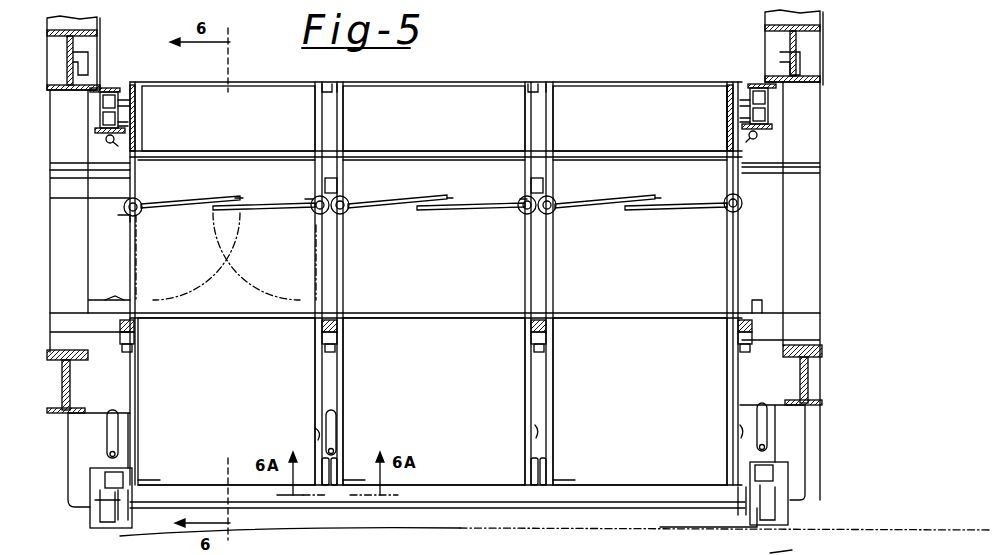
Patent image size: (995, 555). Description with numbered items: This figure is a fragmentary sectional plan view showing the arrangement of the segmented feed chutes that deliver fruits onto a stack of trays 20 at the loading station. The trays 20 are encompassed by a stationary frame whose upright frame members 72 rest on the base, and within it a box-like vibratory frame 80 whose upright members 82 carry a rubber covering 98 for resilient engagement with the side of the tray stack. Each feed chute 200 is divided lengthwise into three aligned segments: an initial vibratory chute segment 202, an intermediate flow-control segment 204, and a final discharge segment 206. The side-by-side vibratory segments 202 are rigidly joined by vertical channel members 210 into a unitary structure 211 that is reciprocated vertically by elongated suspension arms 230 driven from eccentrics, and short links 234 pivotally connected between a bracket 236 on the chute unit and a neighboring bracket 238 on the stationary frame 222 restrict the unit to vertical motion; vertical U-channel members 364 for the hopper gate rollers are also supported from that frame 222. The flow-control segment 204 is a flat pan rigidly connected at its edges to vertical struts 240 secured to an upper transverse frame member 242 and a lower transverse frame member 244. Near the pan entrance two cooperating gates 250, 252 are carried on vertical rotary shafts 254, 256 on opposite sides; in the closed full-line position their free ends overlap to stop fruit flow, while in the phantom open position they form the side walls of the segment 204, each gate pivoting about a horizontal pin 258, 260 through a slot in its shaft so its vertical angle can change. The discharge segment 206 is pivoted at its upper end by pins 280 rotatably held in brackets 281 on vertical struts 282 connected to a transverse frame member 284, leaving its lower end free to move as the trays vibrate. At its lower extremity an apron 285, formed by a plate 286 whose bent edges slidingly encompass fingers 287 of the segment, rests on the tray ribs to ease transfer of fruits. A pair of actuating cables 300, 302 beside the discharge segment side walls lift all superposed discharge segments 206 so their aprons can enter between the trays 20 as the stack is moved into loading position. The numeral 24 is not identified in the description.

The tray 20 is at (537, 531).
The base 24 is at (706, 549).
The upright frame member 72 is at (47, 416).
The vibratory frame 80 is at (90, 514).
The upright member 82 is at (102, 476).
The rubber covering 98 is at (121, 498).
The feed chute 200 is at (578, 63).
The vibratory chute segment 202 is at (297, 128).
The intermediate flow-control segment 204 is at (293, 281).
The discharge segment 206 is at (262, 401).
The channel member 210 is at (336, 82).
The unitary structure 211 is at (611, 81).
The stationary frame 222 is at (100, 33).
The suspension arm 230 is at (120, 143).
The short link 234 is at (138, 112).
The bracket 236 is at (128, 130).
The bracket 238 is at (118, 88).
The vertical strut 240 is at (520, 181).
The transverse frame member 242 is at (125, 170).
The transverse frame member 244 is at (107, 303).
The gate 250 is at (140, 257).
The gate 252 is at (316, 247).
The vertical rotary shaft 254 is at (312, 201).
The vertical rotary shaft 256 is at (236, 205).
The horizontal pin 258 is at (130, 214).
The horizontal pin 260 is at (313, 190).
The pin 280 is at (315, 322).
The bracket 281 is at (315, 338).
The vertical strut 282 is at (315, 352).
The transverse frame member 284 is at (112, 362).
The apron 285 is at (158, 486).
The plate 286 is at (197, 485).
The finger 287 is at (343, 465).
The actuating cable 300 is at (128, 437).
The actuating cable 302 is at (316, 426).
The vertical U-channel member 364 is at (100, 73).